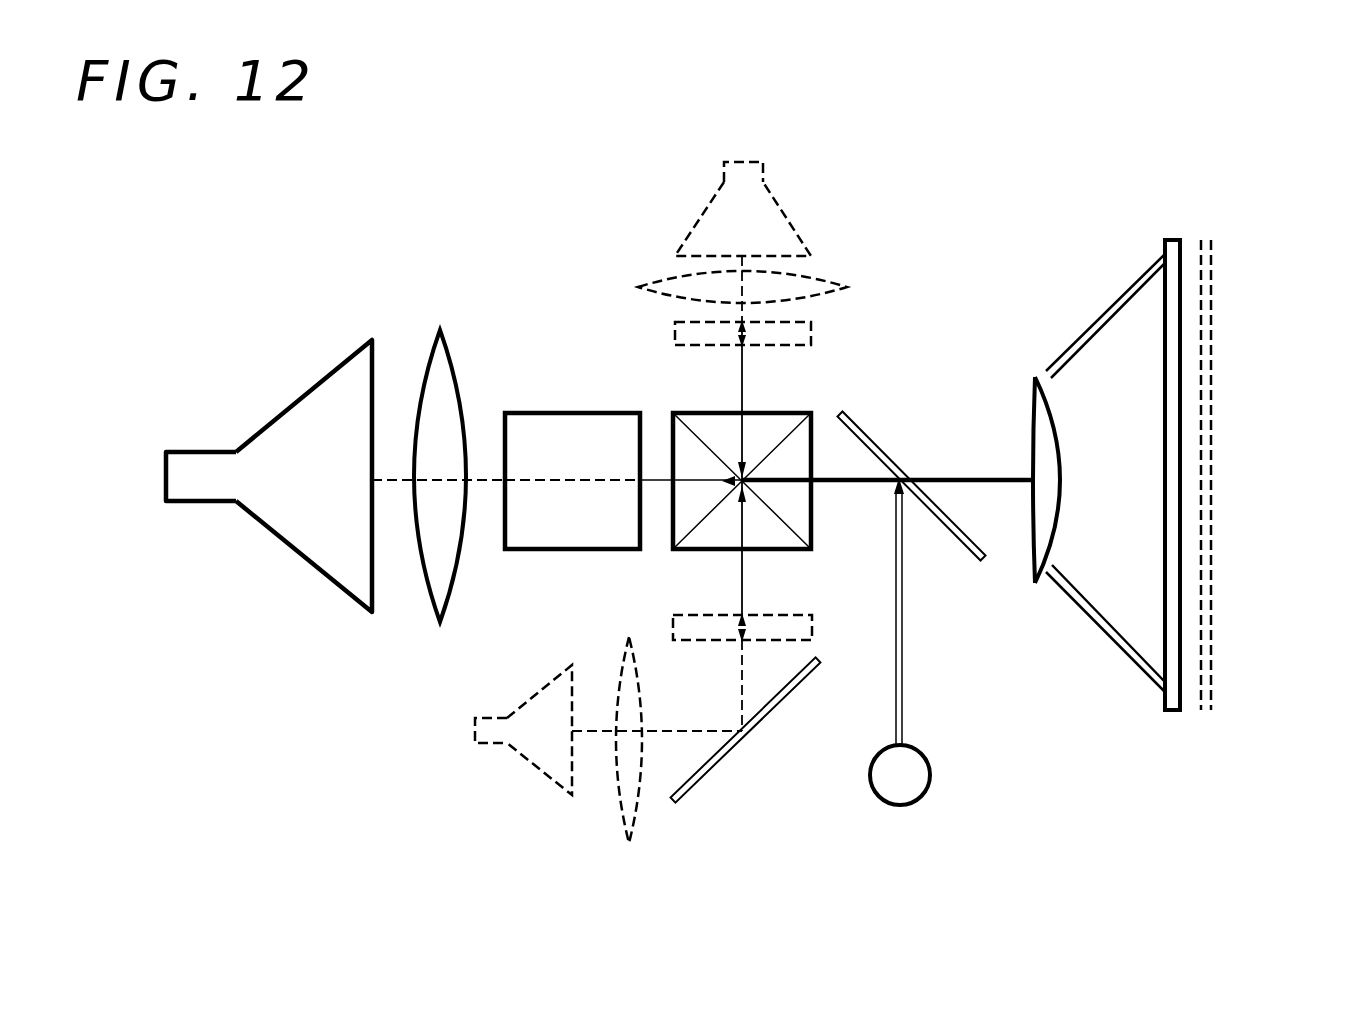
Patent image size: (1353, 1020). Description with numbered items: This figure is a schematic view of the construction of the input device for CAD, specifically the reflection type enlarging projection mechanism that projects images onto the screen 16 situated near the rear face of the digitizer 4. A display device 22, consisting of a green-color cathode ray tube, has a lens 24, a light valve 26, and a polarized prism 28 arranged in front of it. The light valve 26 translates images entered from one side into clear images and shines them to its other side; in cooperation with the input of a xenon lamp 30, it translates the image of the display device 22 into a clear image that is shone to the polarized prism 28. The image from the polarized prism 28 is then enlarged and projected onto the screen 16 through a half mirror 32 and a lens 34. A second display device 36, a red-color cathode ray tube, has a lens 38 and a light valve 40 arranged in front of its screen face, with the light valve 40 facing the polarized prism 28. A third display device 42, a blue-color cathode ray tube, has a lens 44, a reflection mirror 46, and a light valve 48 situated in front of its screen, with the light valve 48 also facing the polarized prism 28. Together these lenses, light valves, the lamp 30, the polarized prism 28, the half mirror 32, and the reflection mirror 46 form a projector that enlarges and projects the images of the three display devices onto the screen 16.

The digitizer 4 is at (1208, 645).
The screen 16 is at (1172, 528).
The display device 22 is at (331, 380).
The lens 24 is at (432, 356).
The light valve 26 is at (547, 424).
The polarized prism 28 is at (696, 418).
The xenon lamp 30 is at (922, 770).
The half mirror 32 is at (865, 432).
The lens 34 is at (1052, 441).
The display device 36 is at (785, 232).
The lens 38 is at (815, 282).
The light valve 40 is at (800, 333).
The display device 42 is at (512, 710).
The lens 44 is at (624, 676).
The reflection mirror 46 is at (780, 700).
The light valve 48 is at (790, 620).